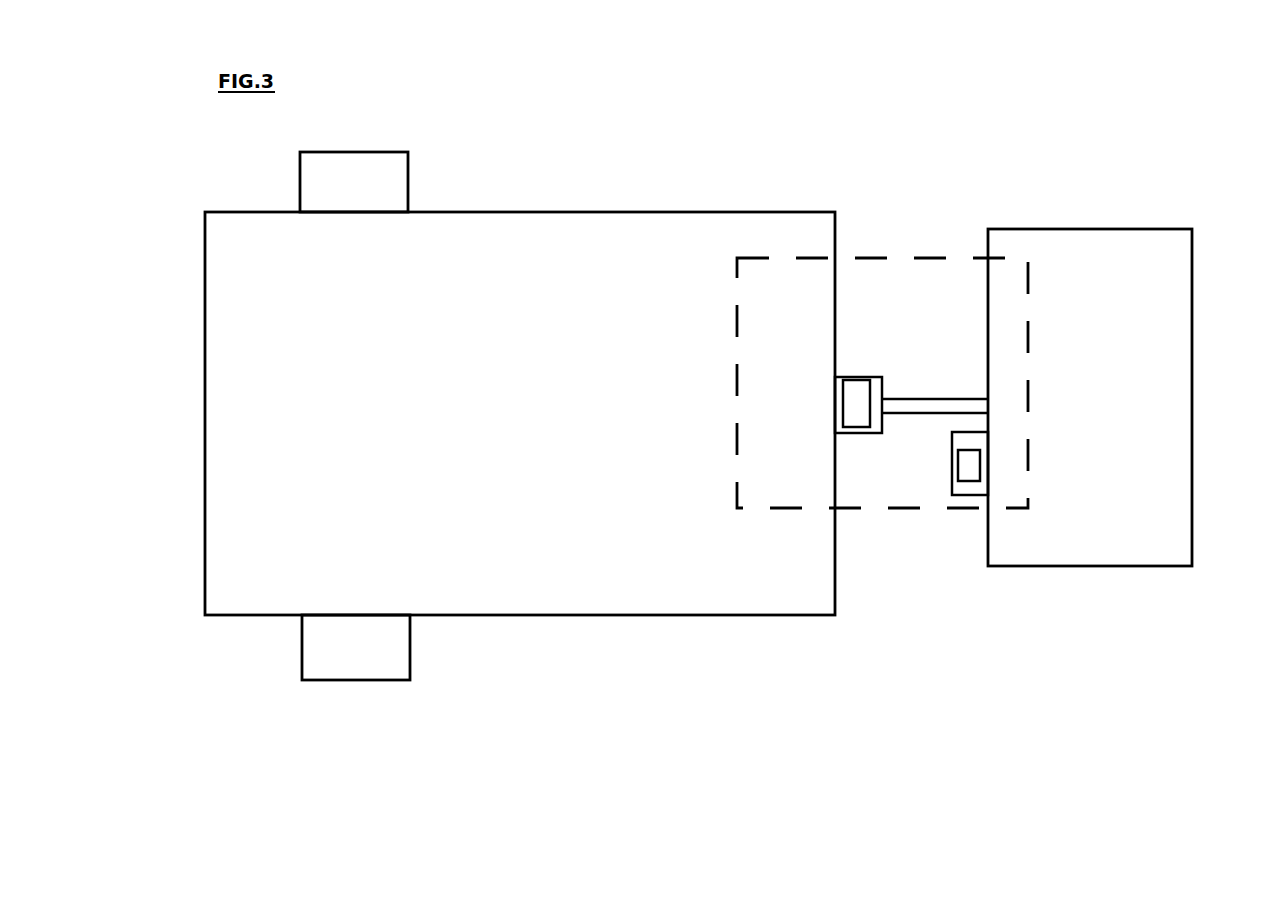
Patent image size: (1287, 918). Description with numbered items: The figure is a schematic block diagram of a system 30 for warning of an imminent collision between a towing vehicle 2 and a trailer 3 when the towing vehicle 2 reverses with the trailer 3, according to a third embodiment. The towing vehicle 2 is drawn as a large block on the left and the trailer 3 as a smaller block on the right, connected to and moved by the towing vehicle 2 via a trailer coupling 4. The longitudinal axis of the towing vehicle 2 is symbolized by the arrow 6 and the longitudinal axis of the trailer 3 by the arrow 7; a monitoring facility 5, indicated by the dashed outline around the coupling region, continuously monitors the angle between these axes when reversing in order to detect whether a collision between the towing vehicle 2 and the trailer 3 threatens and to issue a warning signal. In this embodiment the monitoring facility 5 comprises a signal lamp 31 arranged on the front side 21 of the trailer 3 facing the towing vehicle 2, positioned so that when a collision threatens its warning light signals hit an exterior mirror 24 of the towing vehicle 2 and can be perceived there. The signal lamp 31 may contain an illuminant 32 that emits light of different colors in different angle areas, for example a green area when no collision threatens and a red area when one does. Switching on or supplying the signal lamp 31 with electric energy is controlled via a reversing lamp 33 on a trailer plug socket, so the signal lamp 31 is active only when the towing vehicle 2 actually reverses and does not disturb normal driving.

The towing vehicle 2 is at (435, 210).
The exterior mirror 24 is at (356, 682).
The monitoring facility 5 is at (750, 256).
The trailer 3 is at (1075, 228).
The front side 21 is at (979, 226).
The system 30 is at (900, 180).
The reversing lamp 33 is at (855, 376).
The trailer coupling 4 is at (873, 442).
The signal lamp 31 is at (989, 466).
The illuminant 32 is at (984, 449).
The longitudinal axis of the towing vehicle 6 is at (207, 400).
The longitudinal axis of the trailer 7 is at (1190, 400).